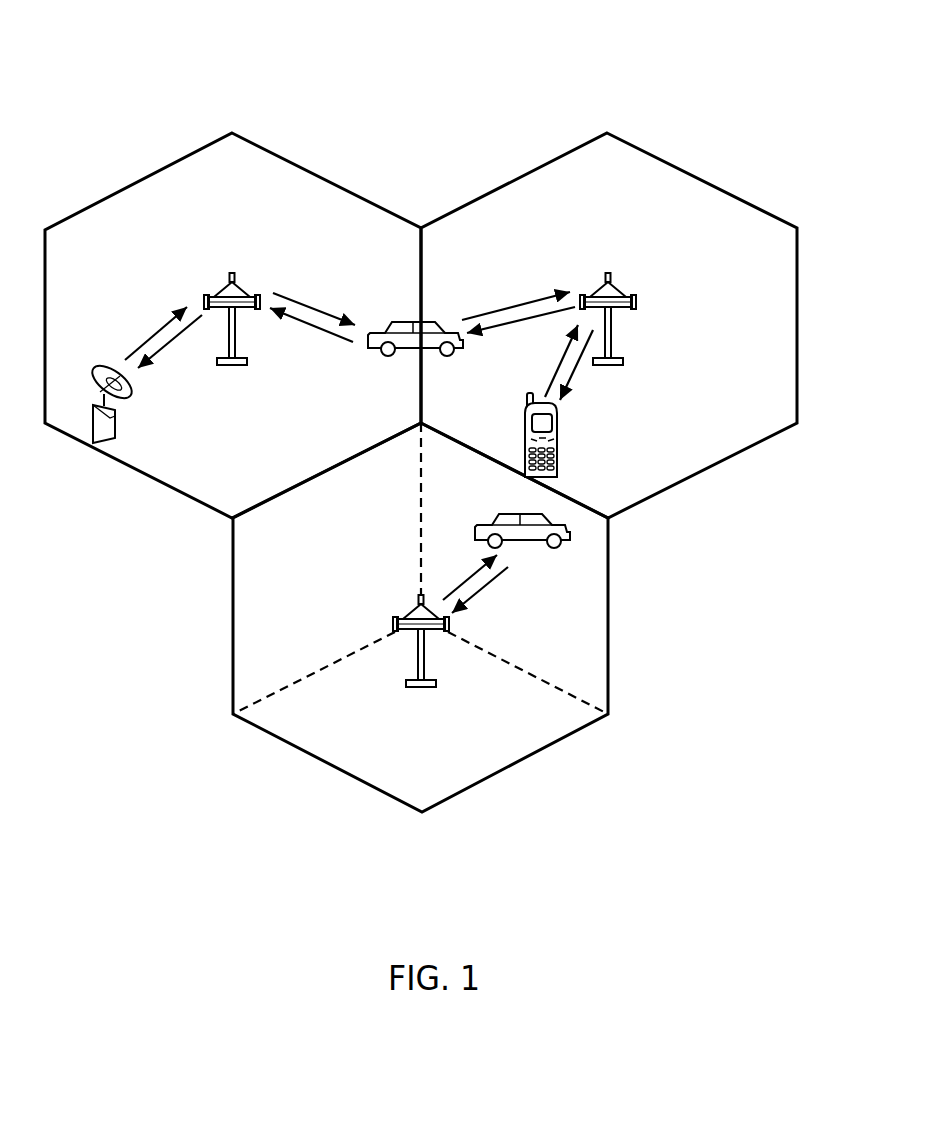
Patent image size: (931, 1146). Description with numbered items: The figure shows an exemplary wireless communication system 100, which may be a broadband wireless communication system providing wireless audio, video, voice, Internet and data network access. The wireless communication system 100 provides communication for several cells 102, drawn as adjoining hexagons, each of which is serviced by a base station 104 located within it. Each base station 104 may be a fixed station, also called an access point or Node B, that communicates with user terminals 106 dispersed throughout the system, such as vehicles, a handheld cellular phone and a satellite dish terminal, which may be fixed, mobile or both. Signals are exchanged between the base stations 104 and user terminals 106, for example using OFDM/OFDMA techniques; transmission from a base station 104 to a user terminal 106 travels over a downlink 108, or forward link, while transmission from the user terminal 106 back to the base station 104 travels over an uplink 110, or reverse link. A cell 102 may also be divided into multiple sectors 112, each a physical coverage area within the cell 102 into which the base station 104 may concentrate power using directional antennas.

The wireless communication system 100 is at (730, 72).
The cell 102 is at (143, 176).
The base station 104 is at (231, 272).
The user terminal 106 is at (116, 425).
The downlink 108 is at (153, 357).
The uplink 110 is at (152, 334).
The sector 112 is at (240, 585).